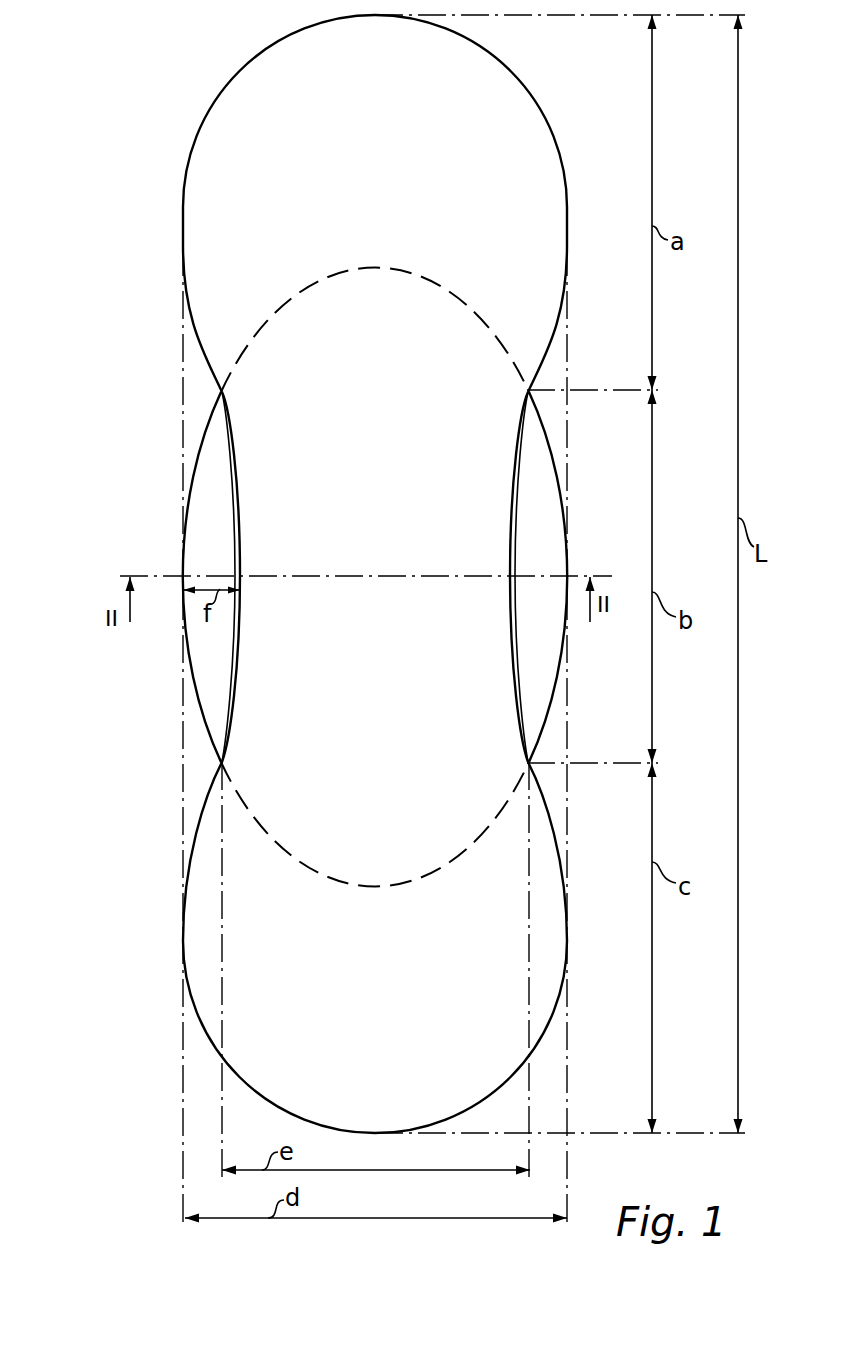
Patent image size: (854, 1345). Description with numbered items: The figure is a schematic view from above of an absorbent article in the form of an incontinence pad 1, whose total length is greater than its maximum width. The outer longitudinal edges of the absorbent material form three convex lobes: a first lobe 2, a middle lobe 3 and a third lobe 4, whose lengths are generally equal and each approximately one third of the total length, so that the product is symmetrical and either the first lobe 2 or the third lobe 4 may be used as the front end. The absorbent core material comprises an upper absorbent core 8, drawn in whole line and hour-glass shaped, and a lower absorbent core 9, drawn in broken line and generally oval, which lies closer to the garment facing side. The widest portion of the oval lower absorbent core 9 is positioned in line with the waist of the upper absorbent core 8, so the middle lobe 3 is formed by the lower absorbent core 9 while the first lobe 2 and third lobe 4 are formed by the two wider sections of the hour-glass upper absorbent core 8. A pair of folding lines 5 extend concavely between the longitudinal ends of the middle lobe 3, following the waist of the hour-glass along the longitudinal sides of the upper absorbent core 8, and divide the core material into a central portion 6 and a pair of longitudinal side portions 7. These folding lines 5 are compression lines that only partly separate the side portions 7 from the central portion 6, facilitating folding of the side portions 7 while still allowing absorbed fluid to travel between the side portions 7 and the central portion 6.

The incontinence pad 1 is at (136, 132).
The first lobe 2 is at (175, 272).
The middle lobe 3 is at (176, 604).
The third lobe 4 is at (177, 882).
The folding lines 5 is at (236, 478).
The central portion 6 is at (378, 511).
The longitudinal side portions 7 is at (226, 551).
The upper absorbent core 8 is at (564, 108).
The lower absorbent core 9 is at (563, 466).